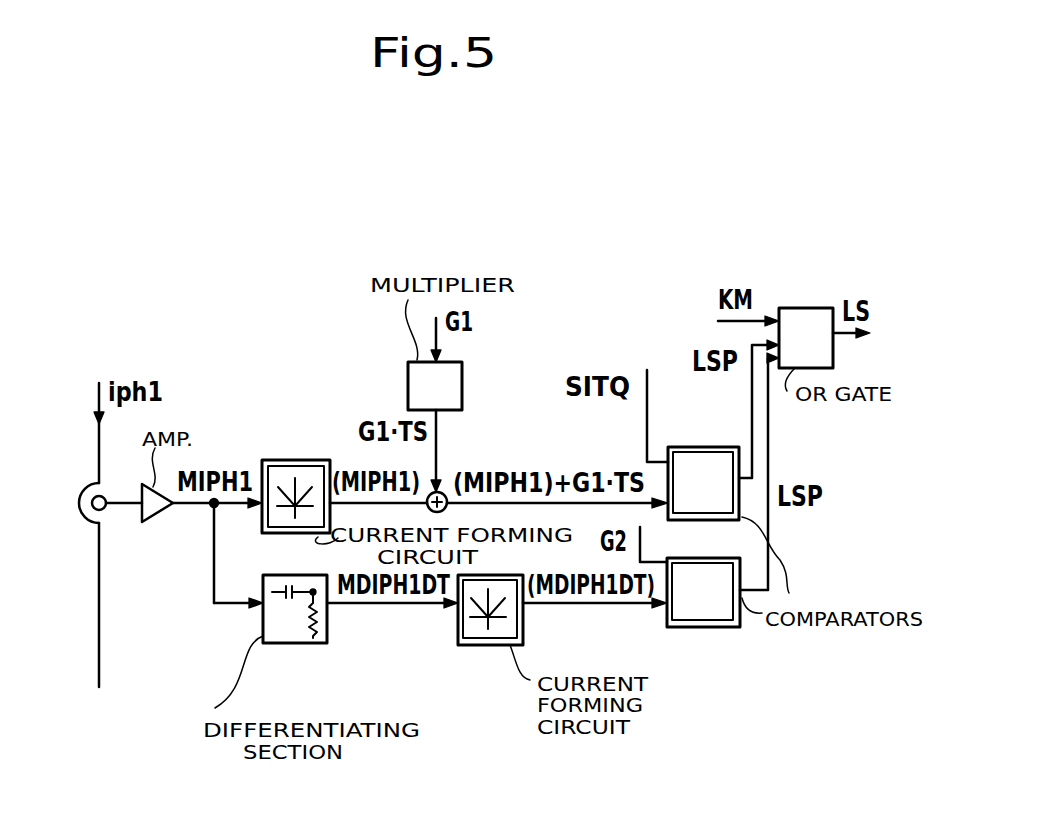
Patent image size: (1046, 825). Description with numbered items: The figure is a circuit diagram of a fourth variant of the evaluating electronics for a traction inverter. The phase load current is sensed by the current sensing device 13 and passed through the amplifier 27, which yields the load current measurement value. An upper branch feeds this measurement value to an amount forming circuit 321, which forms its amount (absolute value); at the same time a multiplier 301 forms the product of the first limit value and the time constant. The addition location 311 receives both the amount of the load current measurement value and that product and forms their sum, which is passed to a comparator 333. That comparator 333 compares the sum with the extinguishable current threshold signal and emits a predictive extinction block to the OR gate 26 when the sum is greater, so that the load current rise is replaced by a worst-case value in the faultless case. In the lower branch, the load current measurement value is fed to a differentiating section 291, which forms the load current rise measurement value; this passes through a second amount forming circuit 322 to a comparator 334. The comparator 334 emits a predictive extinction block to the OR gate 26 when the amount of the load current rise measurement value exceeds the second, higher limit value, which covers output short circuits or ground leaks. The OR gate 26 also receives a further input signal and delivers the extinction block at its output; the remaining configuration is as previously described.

The current sensing device 13 is at (103, 535).
The amplifier 27 is at (143, 488).
The amount forming circuit 321 is at (285, 473).
The multiplier 301 is at (412, 378).
The addition location 311 is at (446, 506).
The differentiating section 291 is at (290, 645).
The amount forming circuit 322 is at (477, 635).
The comparator 333 is at (713, 458).
The comparator 334 is at (700, 610).
The OR gate 26 is at (803, 313).